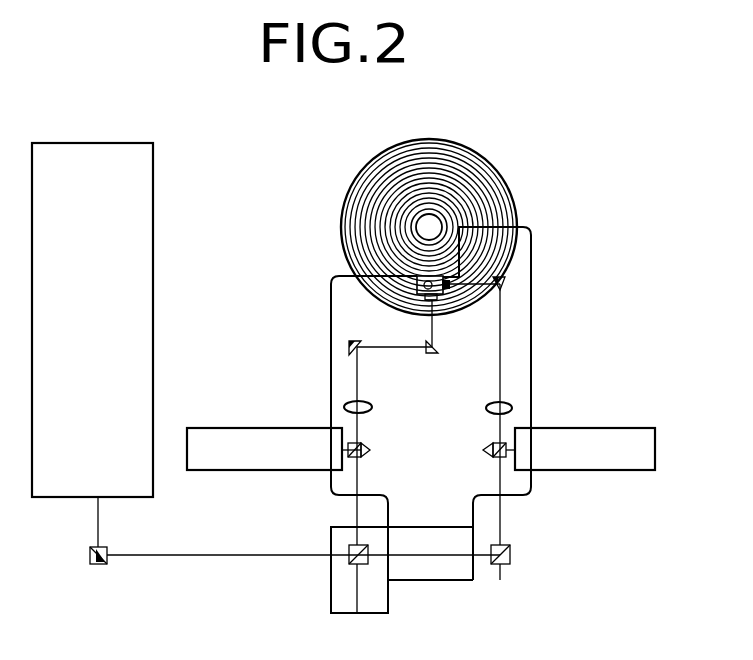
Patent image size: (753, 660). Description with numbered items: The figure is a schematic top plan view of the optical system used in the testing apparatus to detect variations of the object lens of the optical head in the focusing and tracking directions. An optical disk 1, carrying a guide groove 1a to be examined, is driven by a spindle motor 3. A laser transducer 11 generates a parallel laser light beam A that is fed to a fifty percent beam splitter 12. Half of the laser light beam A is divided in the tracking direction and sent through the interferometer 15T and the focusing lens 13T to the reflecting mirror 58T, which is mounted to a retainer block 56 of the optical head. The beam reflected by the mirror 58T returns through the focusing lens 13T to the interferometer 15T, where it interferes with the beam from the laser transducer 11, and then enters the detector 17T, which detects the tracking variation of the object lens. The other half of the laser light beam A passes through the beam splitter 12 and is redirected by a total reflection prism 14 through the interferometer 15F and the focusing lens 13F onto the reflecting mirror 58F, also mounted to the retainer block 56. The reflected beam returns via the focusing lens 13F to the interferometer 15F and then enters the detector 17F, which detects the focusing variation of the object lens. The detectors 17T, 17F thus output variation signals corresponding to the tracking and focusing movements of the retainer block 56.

The optical disk 1 is at (503, 181).
The guide groove 1a is at (512, 202).
The spindle motor 3 is at (445, 218).
The laser transducer 11 is at (153, 234).
The 50% beam splitter 12 is at (349, 563).
The total reflection prism 14 is at (500, 564).
The focusing lens 13T is at (352, 401).
The focusing lens 13F is at (508, 402).
The interferometer 15T is at (370, 452).
The interferometer 15F is at (484, 449).
The detector 17T is at (265, 470).
The detector 17F is at (655, 446).
The retainer block 56 is at (412, 297).
The reflecting mirror 58F is at (450, 292).
The reflecting mirror 58T is at (442, 300).
The laser light beam A is at (237, 554).